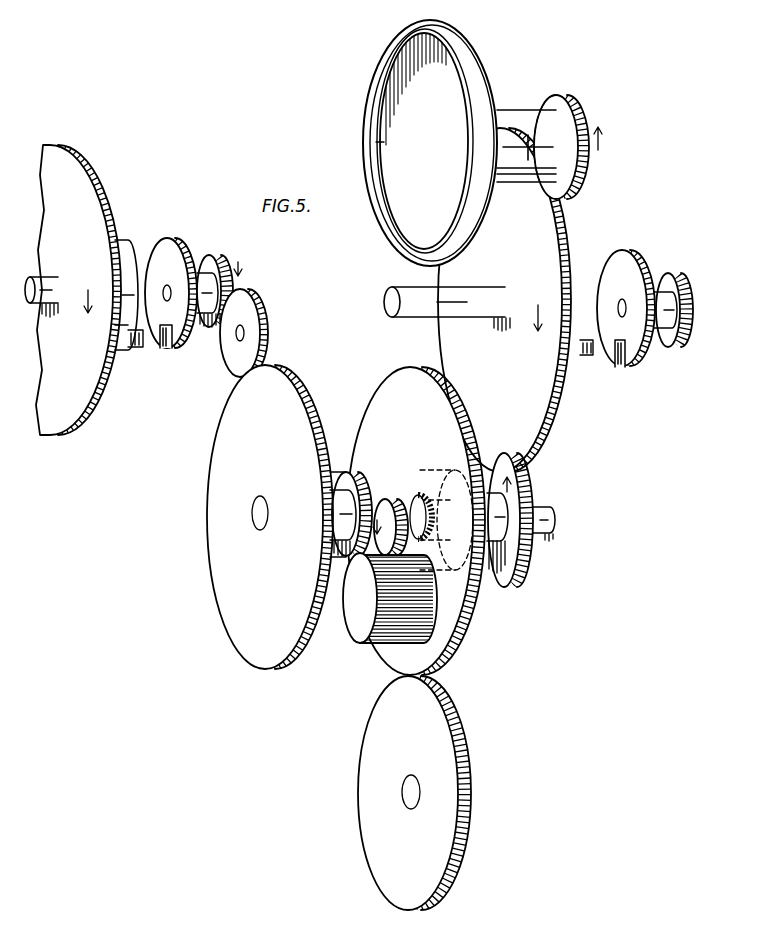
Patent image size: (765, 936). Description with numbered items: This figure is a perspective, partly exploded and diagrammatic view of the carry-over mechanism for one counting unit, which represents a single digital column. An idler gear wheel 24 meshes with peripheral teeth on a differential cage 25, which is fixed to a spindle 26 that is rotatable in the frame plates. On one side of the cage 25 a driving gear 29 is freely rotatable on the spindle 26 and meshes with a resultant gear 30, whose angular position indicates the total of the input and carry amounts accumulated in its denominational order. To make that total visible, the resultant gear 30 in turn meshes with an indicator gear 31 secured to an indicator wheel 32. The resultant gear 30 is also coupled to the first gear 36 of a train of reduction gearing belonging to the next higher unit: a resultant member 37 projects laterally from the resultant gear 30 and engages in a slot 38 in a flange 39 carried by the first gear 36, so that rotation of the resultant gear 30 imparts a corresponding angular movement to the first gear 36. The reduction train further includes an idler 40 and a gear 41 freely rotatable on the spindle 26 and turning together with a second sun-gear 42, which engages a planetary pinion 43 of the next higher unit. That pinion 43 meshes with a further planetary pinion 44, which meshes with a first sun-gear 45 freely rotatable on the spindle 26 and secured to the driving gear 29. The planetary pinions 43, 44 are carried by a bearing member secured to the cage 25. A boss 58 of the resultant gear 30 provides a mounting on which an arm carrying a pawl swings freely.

The idler gear wheel 24 is at (440, 725).
The differential cage 25 is at (440, 638).
The spindle 26 is at (420, 503).
The driving gear 29 is at (527, 560).
The resultant gear 30 is at (512, 415).
The indicator gear 31 is at (563, 188).
The indicator wheel 32 is at (450, 28).
The first gear 36 is at (207, 265).
The resultant member 37 is at (115, 347).
The slot 38 is at (163, 349).
The flange 39 is at (167, 258).
The idler 40 is at (233, 349).
The gear 41 is at (232, 452).
The second sun-gear 42 is at (346, 478).
The planetary pinion 43 is at (355, 622).
The further planetary pinion 44 is at (378, 517).
The first sun-gear 45 is at (478, 587).
The boss 58 is at (124, 262).